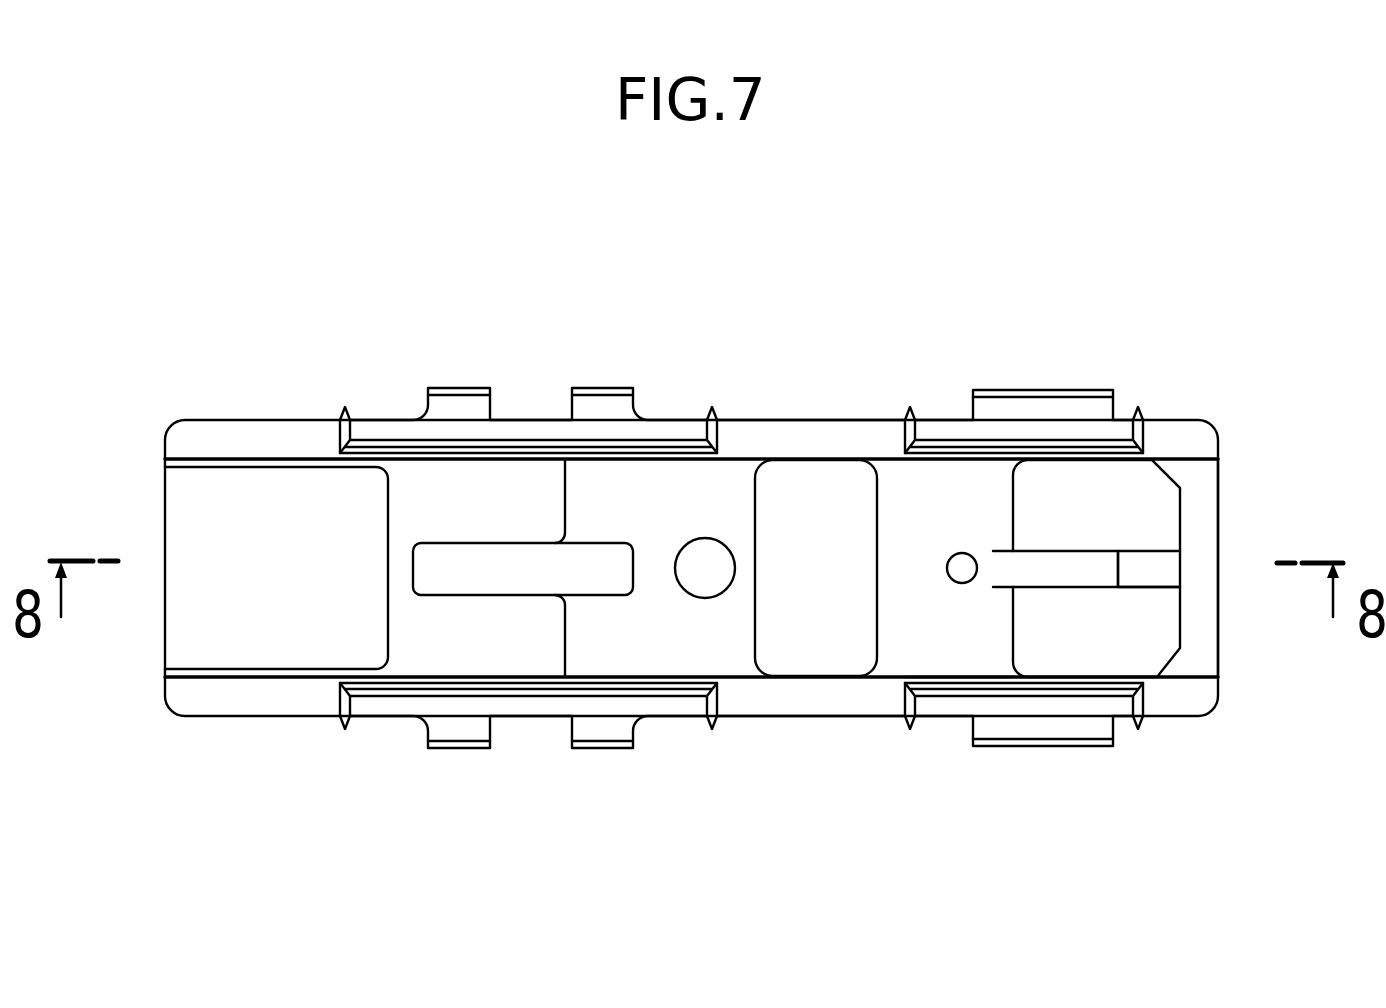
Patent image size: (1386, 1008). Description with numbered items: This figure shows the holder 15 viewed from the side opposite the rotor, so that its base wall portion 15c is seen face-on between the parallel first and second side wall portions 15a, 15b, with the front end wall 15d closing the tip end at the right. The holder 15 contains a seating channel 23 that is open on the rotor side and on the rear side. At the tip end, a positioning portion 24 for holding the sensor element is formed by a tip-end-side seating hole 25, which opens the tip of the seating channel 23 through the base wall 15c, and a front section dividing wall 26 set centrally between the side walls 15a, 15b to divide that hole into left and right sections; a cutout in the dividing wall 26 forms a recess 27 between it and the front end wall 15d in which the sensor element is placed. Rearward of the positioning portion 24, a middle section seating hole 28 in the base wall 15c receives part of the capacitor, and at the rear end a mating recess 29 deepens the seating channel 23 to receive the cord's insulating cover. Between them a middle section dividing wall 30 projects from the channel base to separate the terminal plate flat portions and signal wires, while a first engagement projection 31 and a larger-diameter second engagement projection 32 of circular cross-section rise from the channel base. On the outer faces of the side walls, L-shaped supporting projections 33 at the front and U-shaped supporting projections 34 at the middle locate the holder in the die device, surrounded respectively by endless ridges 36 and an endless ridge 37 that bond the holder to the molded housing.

The holder 15 is at (782, 405).
The first side wall portion 15a is at (833, 438).
The second side wall portion 15b is at (783, 718).
The base wall portion 15c is at (648, 477).
The front end wall 15d is at (1205, 528).
The seating channel 23 is at (969, 676).
The positioning portion 24 is at (1176, 470).
The tip-end-side seating hole 25 is at (1037, 630).
The front section dividing wall 26 is at (1063, 563).
The recess 27 is at (1157, 574).
The middle section seating hole 28 is at (877, 537).
The mating recess 29 is at (265, 488).
The middle section dividing wall 30 is at (500, 560).
The first engagement projection 31 is at (965, 568).
The second engagement projection 32 is at (697, 580).
The supporting projections 33 is at (1060, 390).
The supporting projections 34 is at (597, 388).
The endless ridges 36 is at (1090, 450).
The endless ridge 37 is at (391, 440).